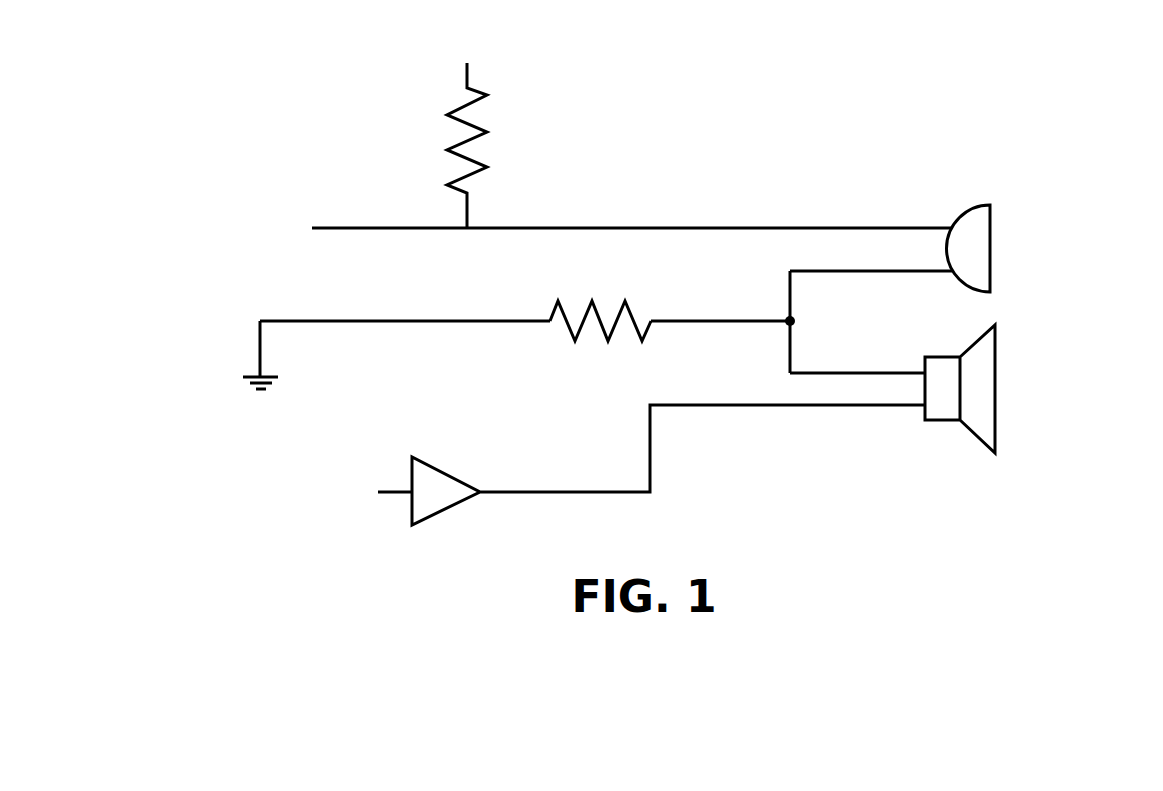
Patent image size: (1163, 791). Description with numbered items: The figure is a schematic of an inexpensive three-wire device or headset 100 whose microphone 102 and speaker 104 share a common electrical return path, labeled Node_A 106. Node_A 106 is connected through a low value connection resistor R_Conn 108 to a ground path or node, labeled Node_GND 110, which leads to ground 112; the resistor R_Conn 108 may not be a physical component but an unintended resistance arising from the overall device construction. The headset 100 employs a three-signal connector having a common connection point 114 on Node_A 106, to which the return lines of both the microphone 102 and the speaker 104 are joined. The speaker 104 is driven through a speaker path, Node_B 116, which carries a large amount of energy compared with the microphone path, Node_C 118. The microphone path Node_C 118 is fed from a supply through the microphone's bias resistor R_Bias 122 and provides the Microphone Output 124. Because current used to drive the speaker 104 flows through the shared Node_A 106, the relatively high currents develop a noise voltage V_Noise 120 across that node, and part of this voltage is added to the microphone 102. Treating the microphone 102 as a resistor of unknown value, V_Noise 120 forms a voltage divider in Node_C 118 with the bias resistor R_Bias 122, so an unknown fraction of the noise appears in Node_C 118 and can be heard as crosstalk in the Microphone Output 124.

The headset 100 is at (1086, 72).
The microphone 102 is at (990, 205).
The speaker 104 is at (995, 390).
The Node_A 106 is at (760, 325).
The connection resistor R_Conn 108 is at (575, 335).
The Node_GND 110 is at (325, 321).
The ground 112 is at (258, 390).
The common connection point 114 is at (790, 321).
The Node_B 116 is at (568, 490).
The Node_C 118 is at (612, 226).
The noise voltage V_Noise 120 is at (725, 280).
The bias resistor R_Bias 122 is at (487, 95).
The Microphone Output 124 is at (245, 193).